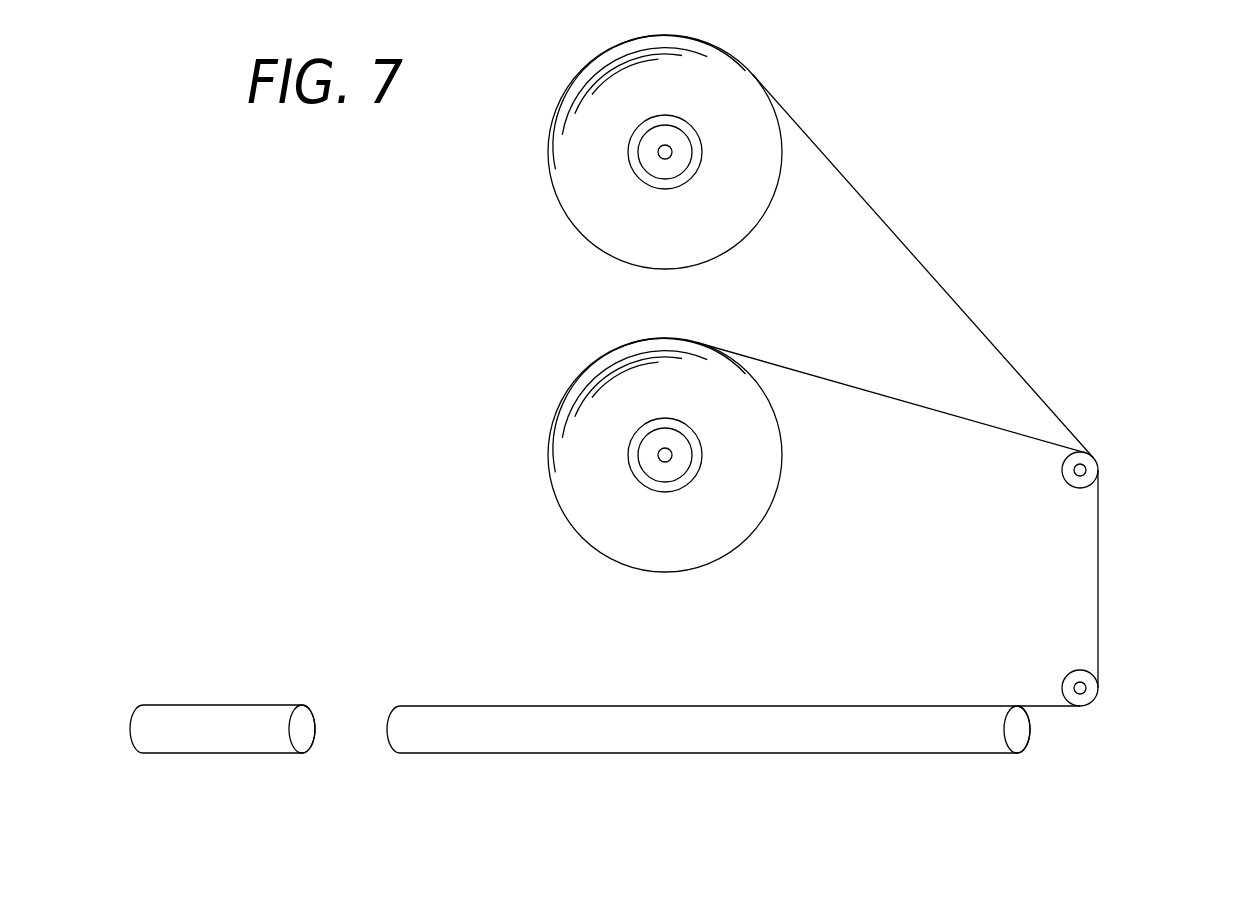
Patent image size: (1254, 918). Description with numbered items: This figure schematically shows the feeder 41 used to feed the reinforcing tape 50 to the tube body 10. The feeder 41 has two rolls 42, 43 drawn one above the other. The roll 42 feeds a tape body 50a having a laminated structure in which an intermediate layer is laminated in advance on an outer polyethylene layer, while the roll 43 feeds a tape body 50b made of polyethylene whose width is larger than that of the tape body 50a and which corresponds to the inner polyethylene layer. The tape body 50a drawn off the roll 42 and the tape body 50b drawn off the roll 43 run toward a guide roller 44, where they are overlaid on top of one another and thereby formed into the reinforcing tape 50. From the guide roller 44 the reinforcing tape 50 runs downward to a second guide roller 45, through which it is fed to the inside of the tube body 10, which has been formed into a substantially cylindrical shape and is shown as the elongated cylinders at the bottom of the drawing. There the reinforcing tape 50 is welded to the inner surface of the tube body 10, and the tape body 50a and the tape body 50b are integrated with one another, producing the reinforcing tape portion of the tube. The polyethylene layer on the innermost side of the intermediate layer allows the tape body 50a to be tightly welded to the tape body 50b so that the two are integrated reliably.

The tube body 10 is at (220, 705).
The feeder 41 is at (995, 232).
The roll 42 is at (615, 540).
The roll 43 is at (585, 212).
The guide roller 44 is at (1110, 458).
The guide roller 45 is at (1103, 710).
The reinforcing tape 50 is at (1098, 580).
The tape body 50a is at (962, 418).
The tape body 50b is at (980, 330).